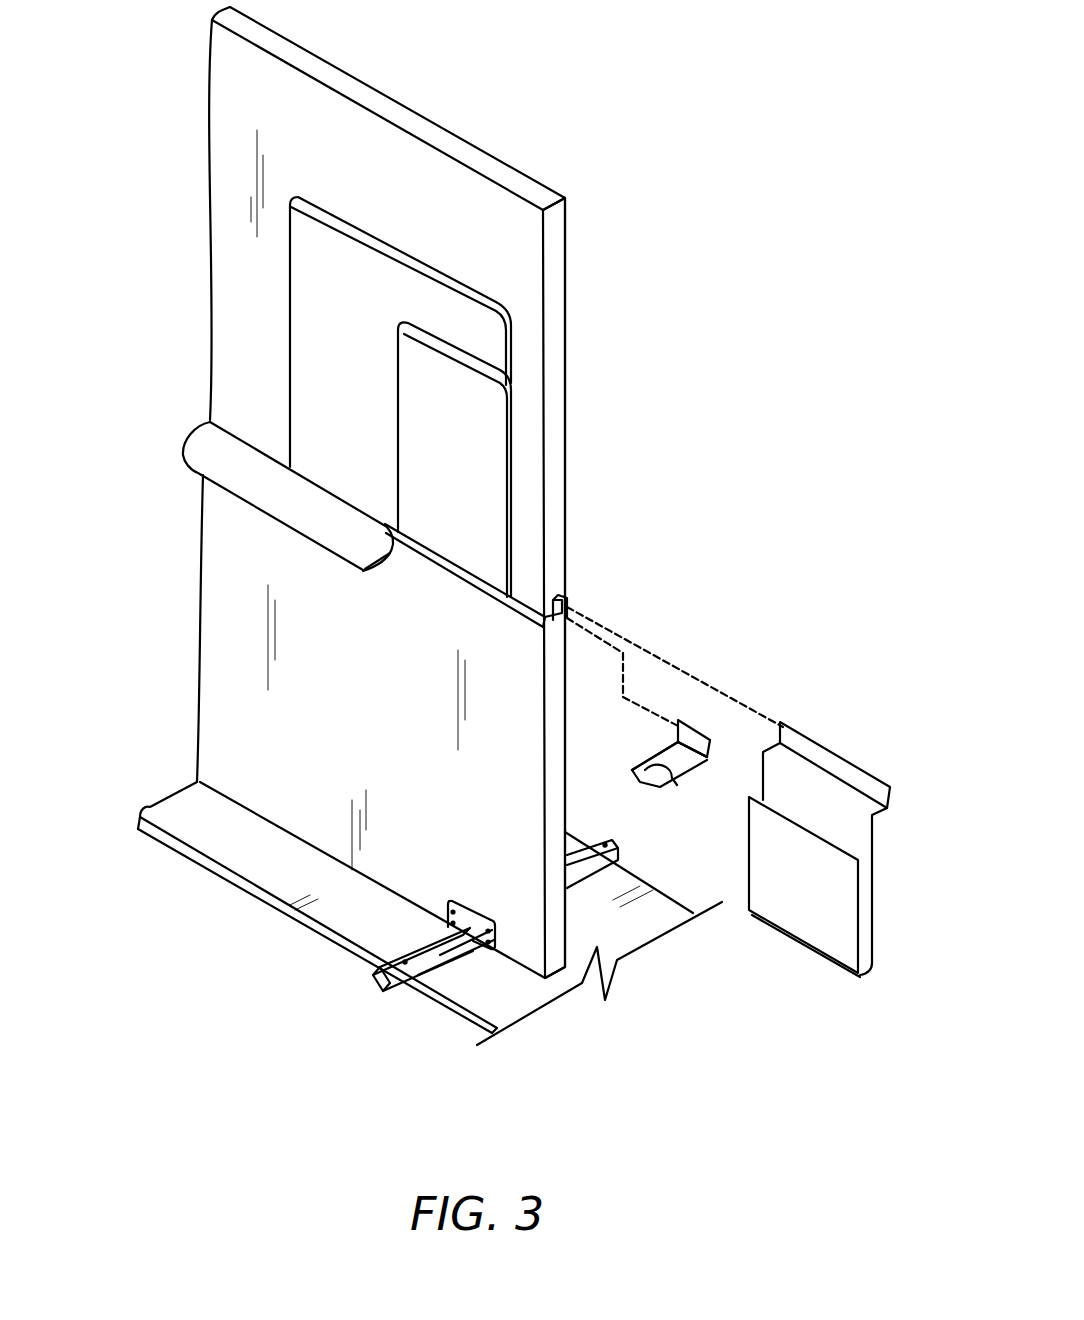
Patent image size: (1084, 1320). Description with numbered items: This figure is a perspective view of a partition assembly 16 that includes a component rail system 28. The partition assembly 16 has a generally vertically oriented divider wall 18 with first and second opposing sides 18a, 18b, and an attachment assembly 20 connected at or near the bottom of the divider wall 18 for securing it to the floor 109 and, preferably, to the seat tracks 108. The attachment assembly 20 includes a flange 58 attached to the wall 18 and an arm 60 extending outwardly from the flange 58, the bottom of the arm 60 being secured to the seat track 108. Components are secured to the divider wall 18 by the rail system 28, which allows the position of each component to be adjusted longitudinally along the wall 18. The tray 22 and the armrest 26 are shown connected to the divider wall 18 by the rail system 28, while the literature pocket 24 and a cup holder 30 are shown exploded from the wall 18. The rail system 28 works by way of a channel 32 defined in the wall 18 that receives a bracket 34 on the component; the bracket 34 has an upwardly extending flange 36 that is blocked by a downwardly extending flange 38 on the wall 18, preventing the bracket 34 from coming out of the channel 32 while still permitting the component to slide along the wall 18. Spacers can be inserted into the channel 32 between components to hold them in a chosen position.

The partition assembly 16 is at (131, 902).
The divider wall 18 is at (557, 338).
The first side 18a is at (306, 125).
The second side 18b is at (565, 228).
The attachment assembly 20 is at (392, 1018).
The tray 22 is at (485, 410).
The literature pocket 24 is at (808, 943).
The armrest 26 is at (228, 462).
The rail system 28 is at (415, 595).
The cup holder 30 is at (677, 770).
The channel 32 is at (605, 607).
The bracket 34 is at (697, 763).
The upwardly extending flange 36 is at (710, 750).
The downwardly extending flange 38 is at (567, 600).
The flange 58 is at (485, 948).
The arm 60 is at (375, 978).
The seat track 108 is at (303, 928).
The floor 109 is at (173, 812).